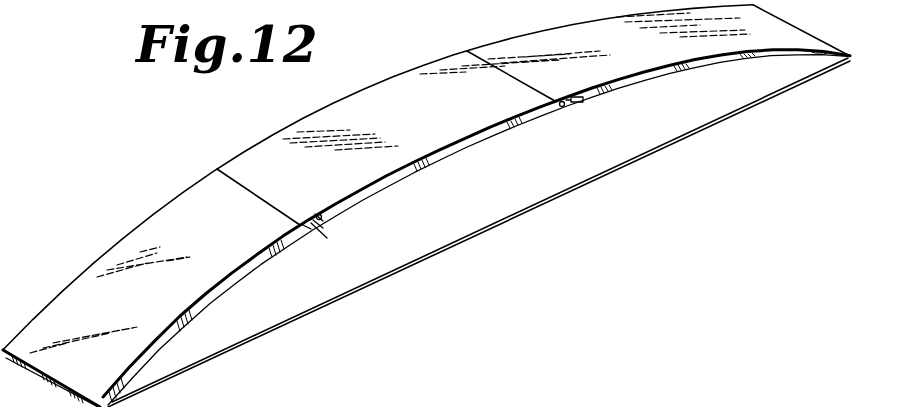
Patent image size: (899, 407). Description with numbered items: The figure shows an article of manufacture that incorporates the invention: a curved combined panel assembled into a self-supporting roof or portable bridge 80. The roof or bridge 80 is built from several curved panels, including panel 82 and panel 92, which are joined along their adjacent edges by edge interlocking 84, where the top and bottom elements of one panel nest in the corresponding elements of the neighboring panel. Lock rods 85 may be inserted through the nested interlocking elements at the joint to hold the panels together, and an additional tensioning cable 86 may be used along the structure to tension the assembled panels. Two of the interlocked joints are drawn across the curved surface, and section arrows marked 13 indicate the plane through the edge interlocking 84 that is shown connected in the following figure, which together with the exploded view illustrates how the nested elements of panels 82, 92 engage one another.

The self-supporting roof or portable bridge 80 is at (509, 3).
The panel 82 is at (133, 238).
The edge interlocking 84 is at (235, 183).
The lock rods 85 is at (320, 224).
The tensioning cable 86 is at (447, 250).
The panel 92 is at (366, 107).
The section line 13- 13 is at (250, 223).